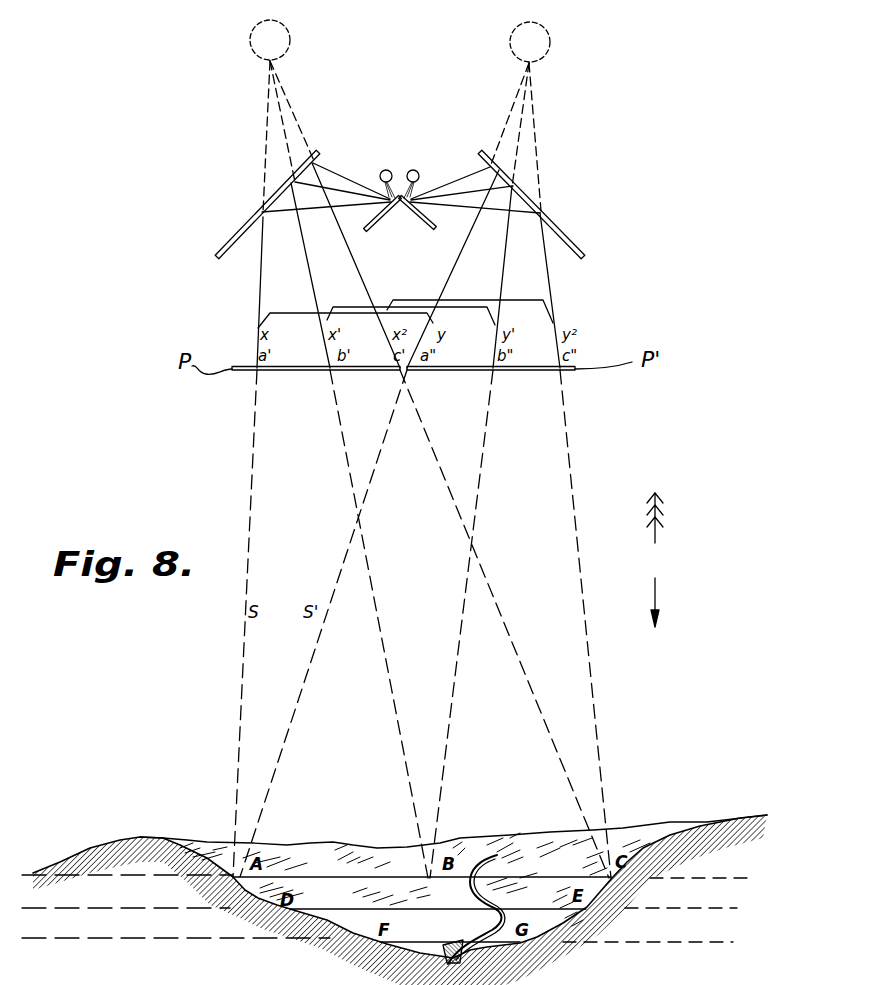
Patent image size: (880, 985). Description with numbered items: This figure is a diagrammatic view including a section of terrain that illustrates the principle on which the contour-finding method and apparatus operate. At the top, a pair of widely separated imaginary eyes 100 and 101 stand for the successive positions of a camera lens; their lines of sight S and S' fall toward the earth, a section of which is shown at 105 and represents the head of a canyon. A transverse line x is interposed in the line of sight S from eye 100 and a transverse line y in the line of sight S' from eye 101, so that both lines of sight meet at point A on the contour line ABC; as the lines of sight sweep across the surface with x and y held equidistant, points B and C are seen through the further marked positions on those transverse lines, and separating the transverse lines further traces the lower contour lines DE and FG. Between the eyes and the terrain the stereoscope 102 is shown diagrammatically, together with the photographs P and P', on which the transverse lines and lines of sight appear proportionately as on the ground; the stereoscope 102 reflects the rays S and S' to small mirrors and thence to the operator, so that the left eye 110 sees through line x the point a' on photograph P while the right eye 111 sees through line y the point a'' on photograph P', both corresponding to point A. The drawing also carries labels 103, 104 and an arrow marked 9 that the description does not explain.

The eye 100 is at (273, 40).
The eye 101 is at (531, 42).
The stereoscope 102 is at (398, 178).
The left image plate on plane P 103 is at (315, 373).
The right image plate on plane P 104 is at (517, 372).
The section of the earth 105 is at (125, 868).
The left eye 110 is at (382, 171).
The right eye 111 is at (418, 172).
The direction of view arrow for FIG. 9 is at (655, 560).